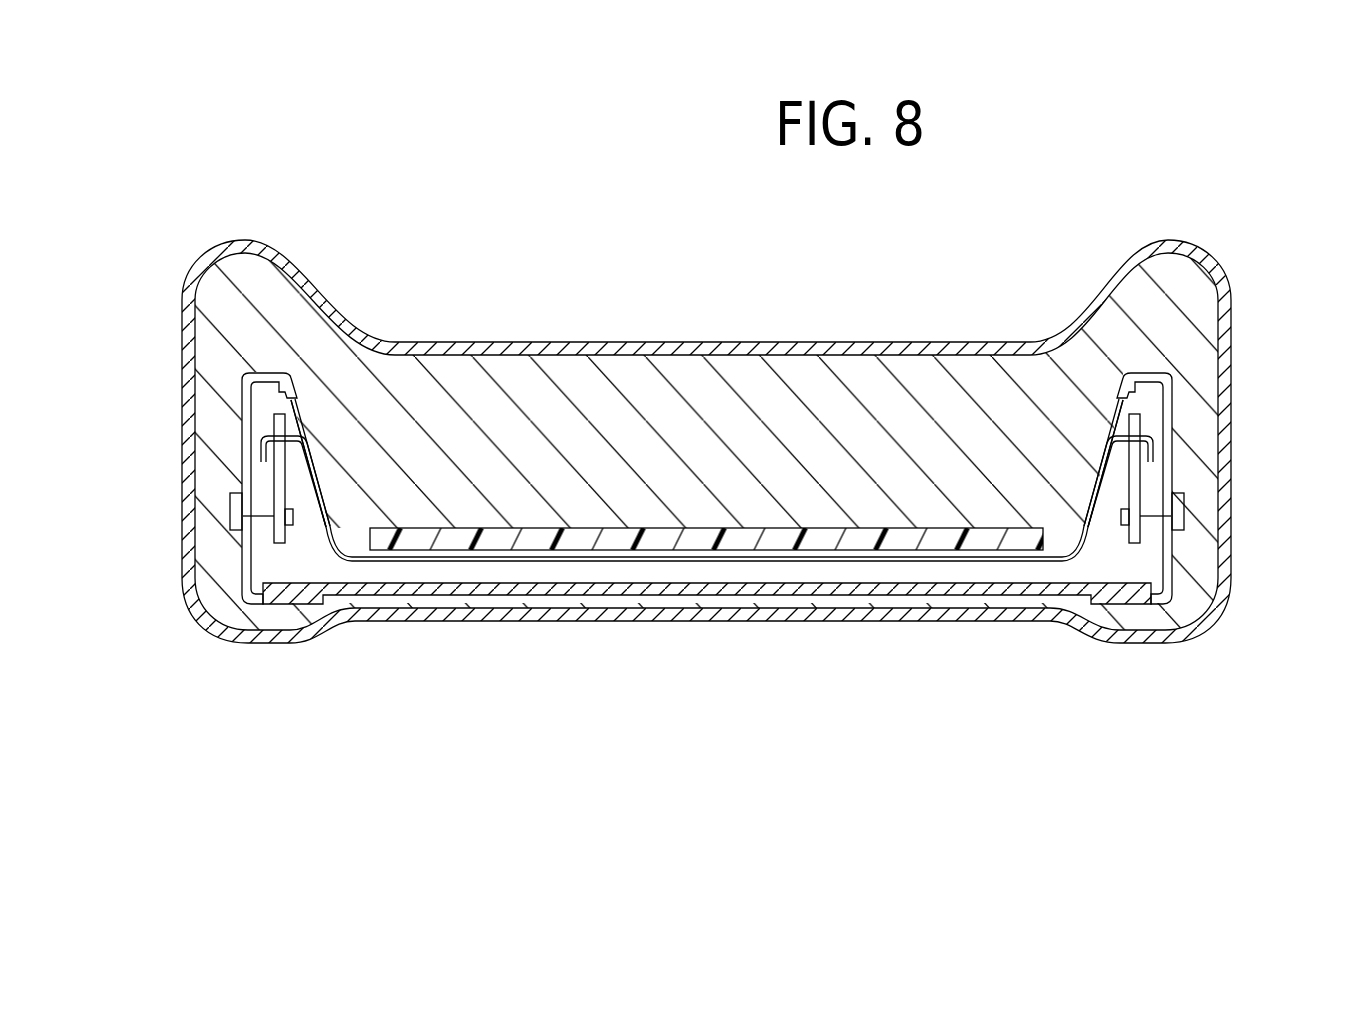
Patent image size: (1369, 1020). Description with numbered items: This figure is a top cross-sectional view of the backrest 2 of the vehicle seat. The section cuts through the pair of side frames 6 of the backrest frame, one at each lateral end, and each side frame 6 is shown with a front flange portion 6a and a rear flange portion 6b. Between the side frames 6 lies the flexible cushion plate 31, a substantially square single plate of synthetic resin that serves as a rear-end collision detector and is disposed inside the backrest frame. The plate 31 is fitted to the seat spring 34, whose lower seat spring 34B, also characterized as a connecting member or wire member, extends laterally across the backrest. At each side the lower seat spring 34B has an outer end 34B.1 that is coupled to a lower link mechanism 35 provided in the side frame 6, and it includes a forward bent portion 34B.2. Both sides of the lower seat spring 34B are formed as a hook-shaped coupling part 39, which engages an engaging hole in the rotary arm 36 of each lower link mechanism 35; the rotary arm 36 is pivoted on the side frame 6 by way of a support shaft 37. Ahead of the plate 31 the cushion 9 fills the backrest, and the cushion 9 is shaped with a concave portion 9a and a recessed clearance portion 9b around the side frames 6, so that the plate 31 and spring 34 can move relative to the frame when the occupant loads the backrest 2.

The backrest 2 is at (738, 342).
The side frame 6 is at (245, 418).
The front flange portion 6a is at (258, 373).
The rear flange portion 6b is at (307, 586).
The cushion 9 is at (562, 380).
The concave portion 9a is at (287, 397).
The clearance portion 9b is at (240, 548).
The flexible cushion plate 31 is at (675, 527).
The seat spring 34 is at (712, 526).
The lower seat spring 34B is at (712, 523).
The outer end 34B.1 is at (261, 450).
The forward bent portion 34B.2 is at (320, 498).
The lower link mechanism 35 is at (698, 502).
The rotary arm 36 is at (707, 517).
The shaft 37 is at (225, 523).
The coupling part 39 is at (268, 402).